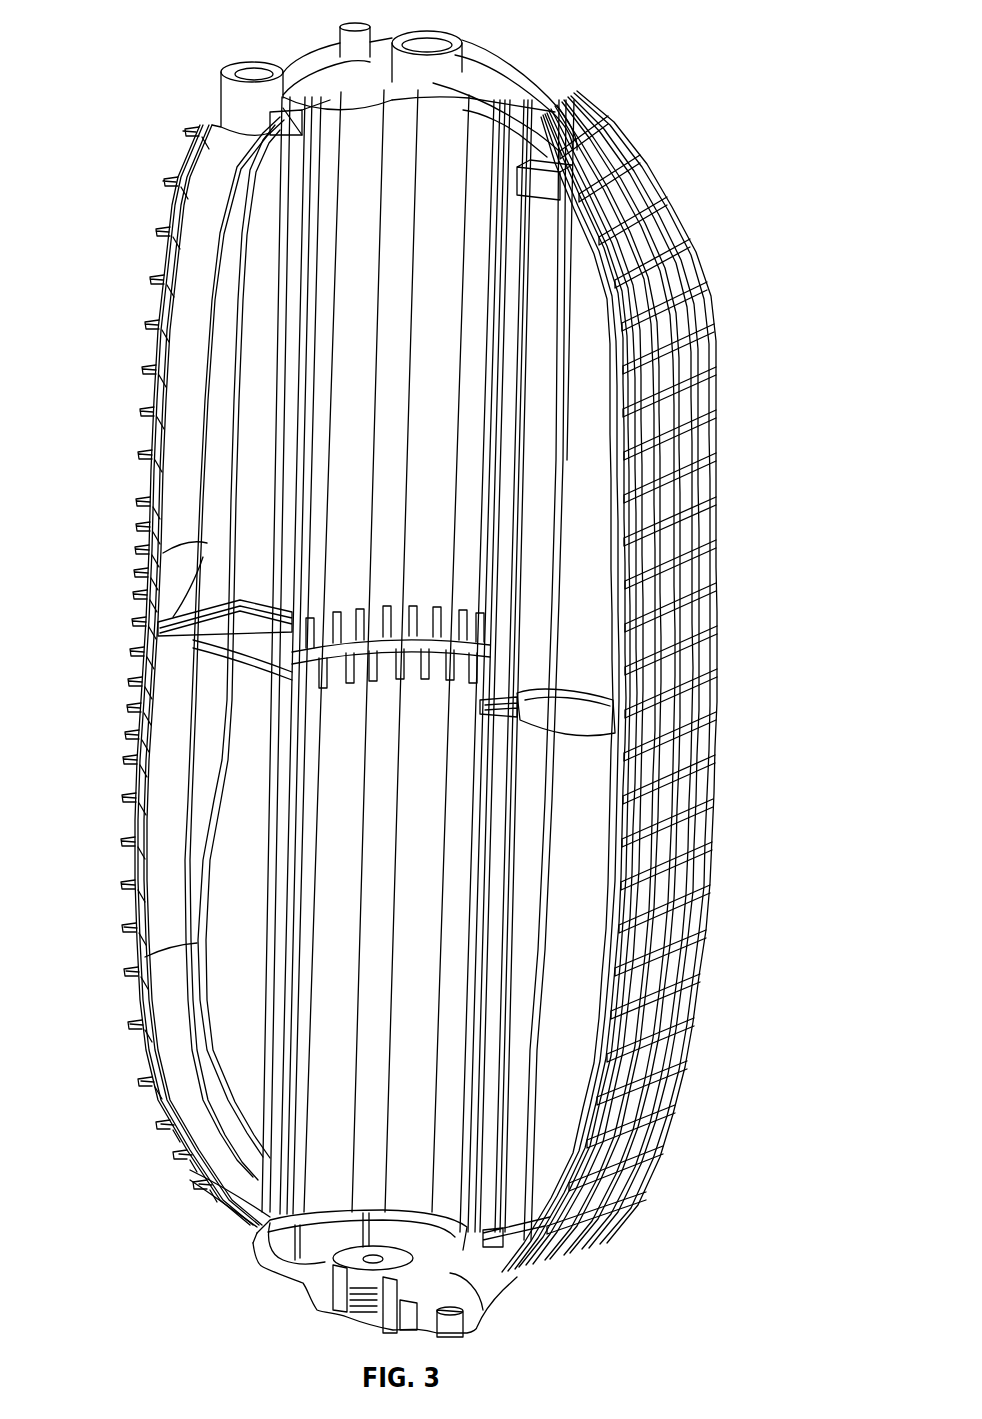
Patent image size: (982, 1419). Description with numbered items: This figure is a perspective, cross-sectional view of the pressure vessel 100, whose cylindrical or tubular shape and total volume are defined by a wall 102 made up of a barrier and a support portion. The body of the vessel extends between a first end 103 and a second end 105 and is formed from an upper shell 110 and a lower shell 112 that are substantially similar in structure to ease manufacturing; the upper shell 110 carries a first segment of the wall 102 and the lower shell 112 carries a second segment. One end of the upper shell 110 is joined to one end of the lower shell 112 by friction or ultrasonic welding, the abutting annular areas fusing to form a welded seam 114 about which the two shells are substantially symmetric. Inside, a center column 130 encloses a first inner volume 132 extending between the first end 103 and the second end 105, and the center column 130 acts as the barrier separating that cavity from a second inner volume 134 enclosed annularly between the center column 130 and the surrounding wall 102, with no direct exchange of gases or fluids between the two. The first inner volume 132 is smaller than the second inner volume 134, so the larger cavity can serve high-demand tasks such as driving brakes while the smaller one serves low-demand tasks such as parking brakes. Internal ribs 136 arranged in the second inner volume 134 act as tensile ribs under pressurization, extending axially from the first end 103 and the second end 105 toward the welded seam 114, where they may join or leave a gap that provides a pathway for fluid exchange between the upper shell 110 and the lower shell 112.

The pressure vessel 100 is at (744, 43).
The wall 102 is at (750, 468).
The first end 103 is at (547, 150).
The second end 105 is at (546, 1277).
The upper shell 110 is at (750, 166).
The lower shell 112 is at (719, 1110).
The welded seam 114 is at (313, 667).
The center column 130 is at (505, 465).
The first inner volume 132 is at (353, 263).
The second inner volume 134 is at (250, 451).
The internal ribs 136 is at (233, 862).